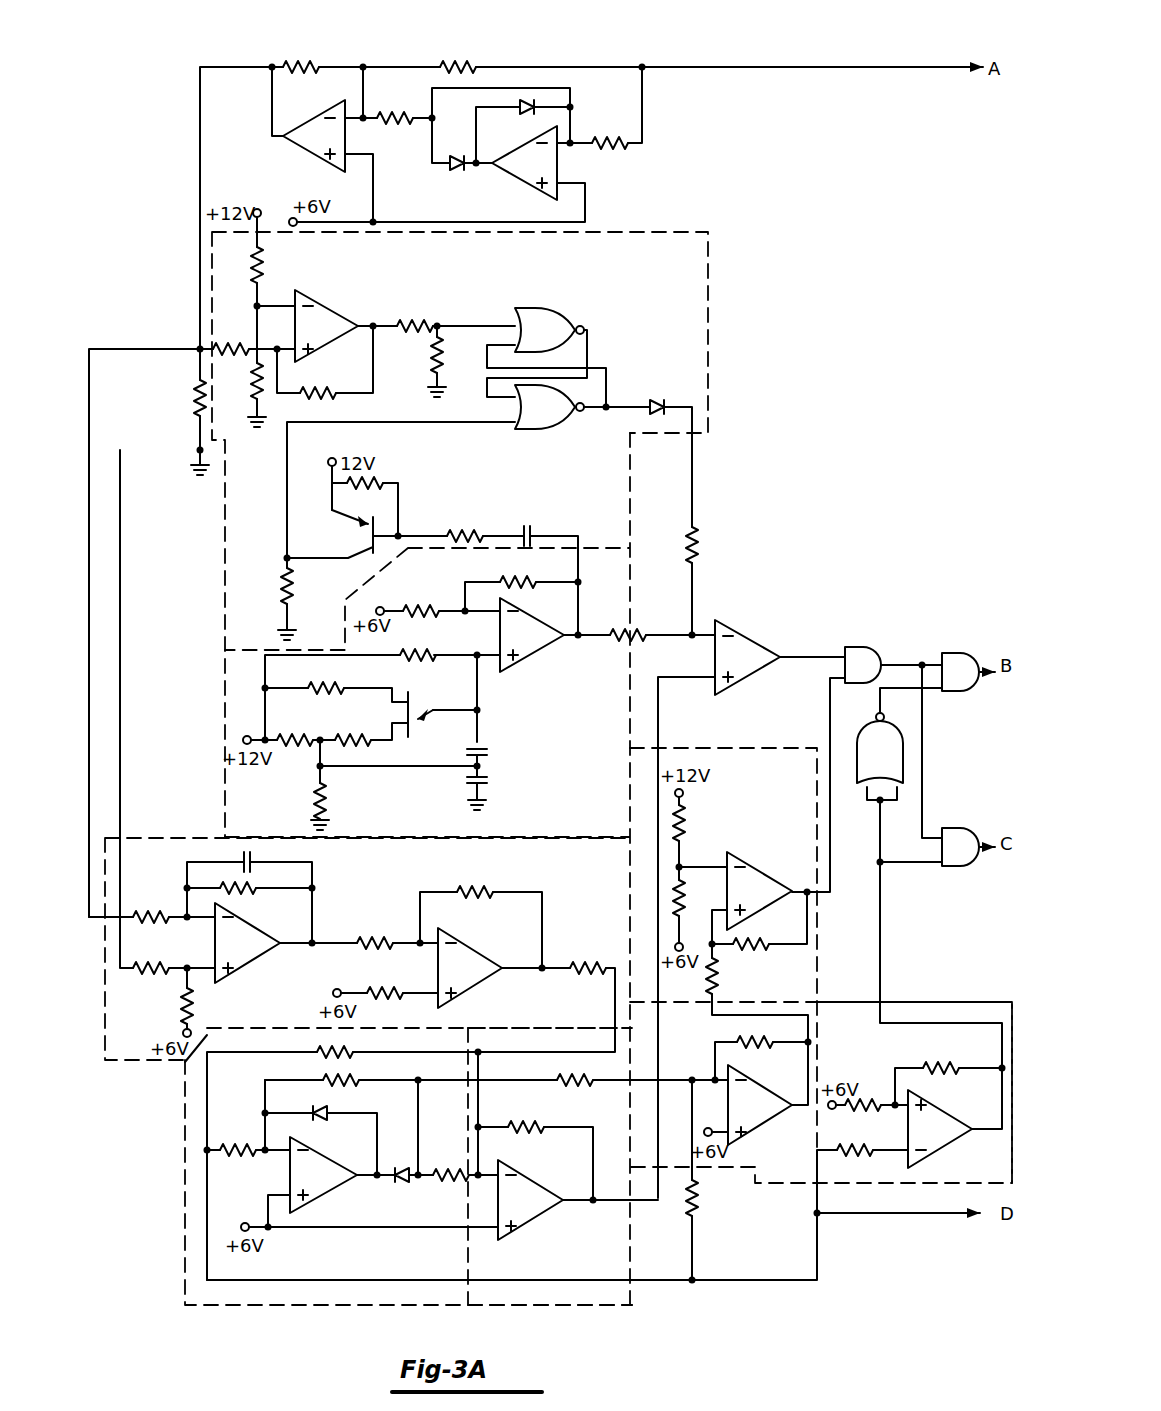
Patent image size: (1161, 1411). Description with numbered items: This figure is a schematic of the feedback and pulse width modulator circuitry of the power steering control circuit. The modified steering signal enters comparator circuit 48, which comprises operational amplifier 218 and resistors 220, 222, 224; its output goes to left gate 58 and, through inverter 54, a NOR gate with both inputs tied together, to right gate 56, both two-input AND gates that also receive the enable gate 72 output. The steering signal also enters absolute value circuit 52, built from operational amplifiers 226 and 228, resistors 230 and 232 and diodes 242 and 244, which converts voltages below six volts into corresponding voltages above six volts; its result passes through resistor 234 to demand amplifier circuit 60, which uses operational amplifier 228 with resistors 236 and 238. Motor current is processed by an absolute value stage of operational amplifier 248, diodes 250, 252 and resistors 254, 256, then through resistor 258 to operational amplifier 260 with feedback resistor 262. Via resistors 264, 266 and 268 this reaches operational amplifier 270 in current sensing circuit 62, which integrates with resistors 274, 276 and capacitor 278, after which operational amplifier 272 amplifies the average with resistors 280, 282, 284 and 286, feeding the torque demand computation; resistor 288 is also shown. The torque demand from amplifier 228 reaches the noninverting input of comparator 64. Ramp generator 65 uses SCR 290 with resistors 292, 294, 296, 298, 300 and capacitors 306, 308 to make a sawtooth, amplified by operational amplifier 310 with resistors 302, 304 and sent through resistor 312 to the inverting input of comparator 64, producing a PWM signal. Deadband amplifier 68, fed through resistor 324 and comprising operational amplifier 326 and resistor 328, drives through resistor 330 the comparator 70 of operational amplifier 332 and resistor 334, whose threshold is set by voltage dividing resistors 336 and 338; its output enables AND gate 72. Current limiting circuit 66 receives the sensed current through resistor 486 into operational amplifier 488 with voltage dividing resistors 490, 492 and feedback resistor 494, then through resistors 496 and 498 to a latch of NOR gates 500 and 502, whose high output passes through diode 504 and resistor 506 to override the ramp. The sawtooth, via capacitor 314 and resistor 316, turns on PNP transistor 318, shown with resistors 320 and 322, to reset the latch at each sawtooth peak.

The comparator circuit 48 is at (945, 1002).
The absolute value circuit 52 is at (185, 1168).
The inverter 54 is at (858, 780).
The right gate 56 is at (962, 652).
The left gate 58 is at (992, 788).
The demand amplifier circuit 60 is at (632, 1296).
The current sensing circuit 62 is at (150, 838).
The comparator 64 is at (761, 638).
The ramp generator 65 is at (631, 582).
The current limiting circuit 66 is at (708, 280).
The deadband amplifier 68 is at (795, 1002).
The comparator circuit 70 is at (716, 748).
The enable gate 72 is at (863, 647).
The operational amplifier 218 is at (943, 1147).
The resistor 220 is at (878, 1138).
The resistor 222 is at (885, 1070).
The resistor 224 is at (952, 1050).
The operational amplifier 226 is at (331, 1188).
The operational amplifier 228 is at (533, 1228).
The resistor 230 is at (238, 1153).
The resistor 232 is at (353, 1080).
The resistor 234 is at (445, 1178).
The resistor 236 is at (538, 1110).
The resistor 238 is at (575, 1083).
The diode 242 is at (330, 1113).
The diode 244 is at (435, 1145).
The operational amplifier 248 is at (520, 185).
The diode 250 is at (452, 172).
The diode 252 is at (528, 102).
The resistor 254 is at (610, 150).
The resistor 256 is at (445, 63).
The resistor 258 is at (412, 95).
The operational amplifier 260 is at (315, 153).
The feedback resistor 262 is at (322, 38).
The resistor 264 is at (195, 397).
The resistor 266 is at (165, 888).
The resistor 268 is at (160, 970).
The operational amplifier 270 is at (252, 967).
The operational amplifier 272 is at (523, 978).
The resistor 274 is at (191, 1006).
The resistor 276 is at (255, 890).
The capacitor 278 is at (253, 853).
The resistor 280 is at (392, 925).
The resistor 282 is at (378, 998).
The resistor 284 is at (495, 872).
The resistor 286 is at (588, 965).
The resistor 288 is at (343, 1052).
The SCR 290 is at (412, 700).
The resistor 292 is at (417, 655).
The resistor 294 is at (336, 684).
The resistor 296 is at (363, 721).
The resistor 298 is at (300, 721).
The resistor 300 is at (327, 800).
The resistor 302 is at (445, 588).
The resistor 304 is at (528, 572).
The capacitor 306 is at (490, 748).
The capacitor 308 is at (490, 780).
The operational amplifier 310 is at (541, 670).
The resistor 312 is at (625, 632).
The capacitor 314 is at (558, 505).
The resistor 316 is at (490, 505).
The PNP transistor 318 is at (342, 534).
The resistor 320 is at (370, 481).
The resistor 322 is at (288, 583).
The resistor 324 is at (703, 1213).
The operational amplifier 326 is at (758, 1143).
The resistor 328 is at (751, 1045).
The resistor 330 is at (715, 978).
The operational amplifier 332 is at (746, 858).
The resistor 334 is at (758, 953).
The voltage dividing resistor 336 is at (686, 825).
The voltage dividing resistor 338 is at (682, 900).
The resistor 486 is at (228, 341).
The operational amplifier 488 is at (327, 304).
The voltage dividing resistor 490 is at (265, 260).
The voltage dividing resistor 492 is at (255, 413).
The feedback resistor 494 is at (318, 393).
The voltage dividing resistor 496 is at (412, 321).
The voltage dividing resistor 498 is at (430, 356).
The NOR gate 500 is at (558, 310).
The NOR gate 502 is at (540, 432).
The diode 504 is at (660, 398).
The resistor 506 is at (695, 540).